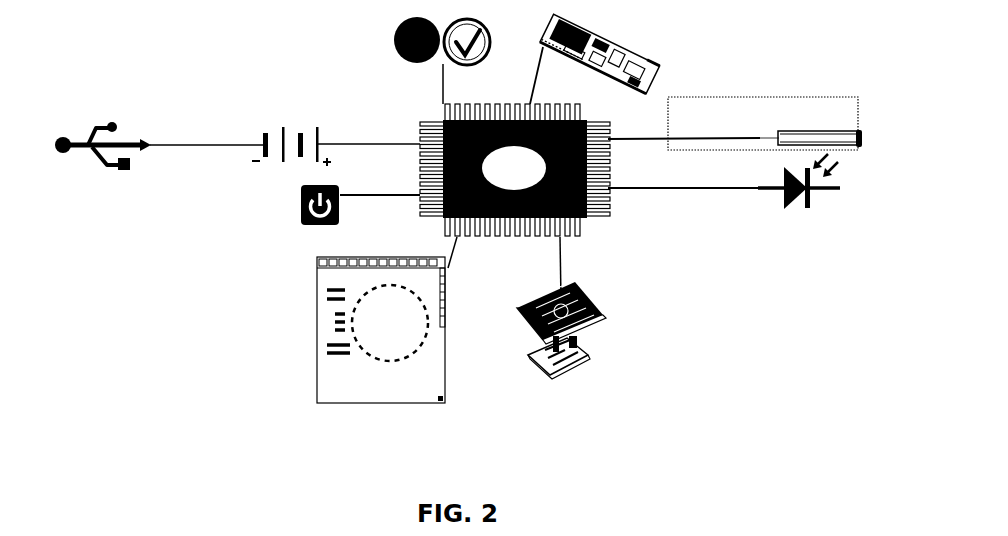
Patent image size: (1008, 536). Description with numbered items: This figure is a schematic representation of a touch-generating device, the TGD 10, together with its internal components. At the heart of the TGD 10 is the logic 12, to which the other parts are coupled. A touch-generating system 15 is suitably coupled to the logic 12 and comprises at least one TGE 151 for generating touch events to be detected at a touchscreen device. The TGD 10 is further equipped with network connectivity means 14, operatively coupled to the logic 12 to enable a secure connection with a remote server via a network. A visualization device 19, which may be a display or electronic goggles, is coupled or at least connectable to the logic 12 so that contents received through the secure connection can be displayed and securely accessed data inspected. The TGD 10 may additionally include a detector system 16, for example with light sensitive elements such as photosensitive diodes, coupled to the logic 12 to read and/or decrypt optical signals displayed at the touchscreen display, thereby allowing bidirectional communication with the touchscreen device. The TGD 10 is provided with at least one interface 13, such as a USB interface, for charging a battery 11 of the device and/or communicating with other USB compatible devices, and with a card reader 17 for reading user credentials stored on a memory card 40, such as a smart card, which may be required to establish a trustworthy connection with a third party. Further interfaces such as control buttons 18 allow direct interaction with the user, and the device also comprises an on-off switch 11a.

The TGD 10 is at (180, 348).
The battery 11 is at (295, 120).
The on-off switch 11a is at (297, 200).
The logic 12 is at (613, 210).
The interface 13 is at (95, 177).
The network connectivity means 14 is at (660, 65).
The touch-generating system 15 is at (755, 153).
The TGE 151 is at (832, 128).
The detector system 16 is at (777, 205).
The card reader 17 is at (578, 342).
The control buttons 18 is at (392, 50).
The visualization device 19 is at (315, 338).
The memory card 40 is at (597, 303).